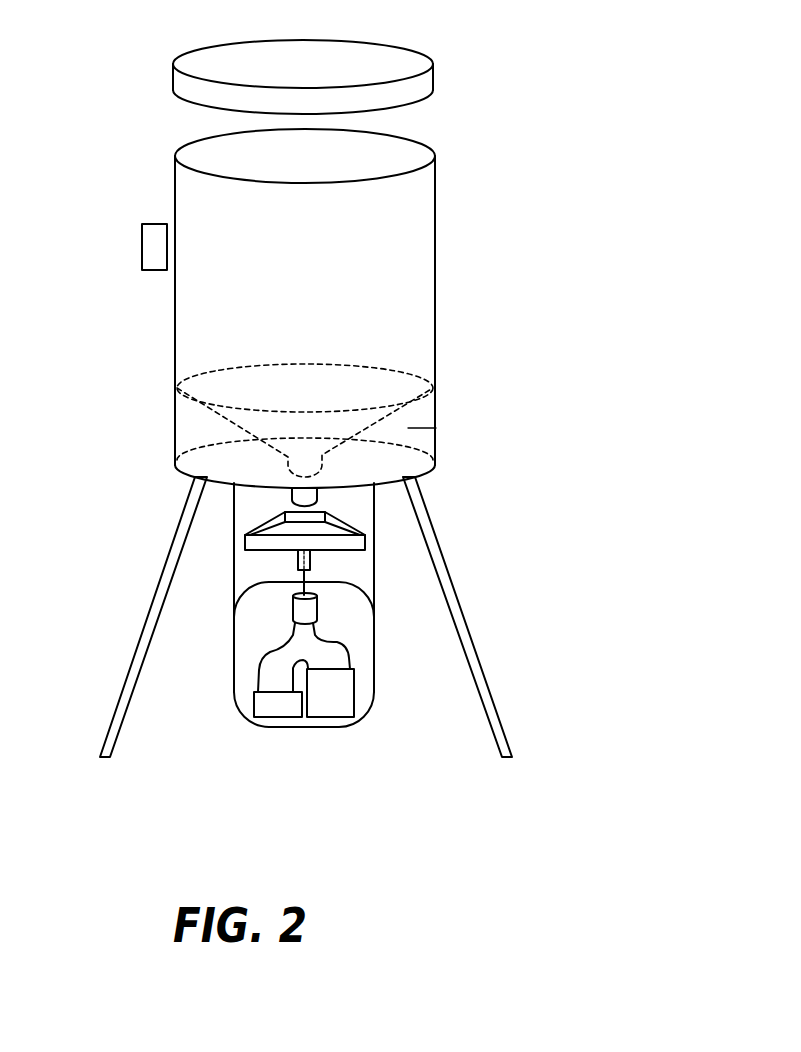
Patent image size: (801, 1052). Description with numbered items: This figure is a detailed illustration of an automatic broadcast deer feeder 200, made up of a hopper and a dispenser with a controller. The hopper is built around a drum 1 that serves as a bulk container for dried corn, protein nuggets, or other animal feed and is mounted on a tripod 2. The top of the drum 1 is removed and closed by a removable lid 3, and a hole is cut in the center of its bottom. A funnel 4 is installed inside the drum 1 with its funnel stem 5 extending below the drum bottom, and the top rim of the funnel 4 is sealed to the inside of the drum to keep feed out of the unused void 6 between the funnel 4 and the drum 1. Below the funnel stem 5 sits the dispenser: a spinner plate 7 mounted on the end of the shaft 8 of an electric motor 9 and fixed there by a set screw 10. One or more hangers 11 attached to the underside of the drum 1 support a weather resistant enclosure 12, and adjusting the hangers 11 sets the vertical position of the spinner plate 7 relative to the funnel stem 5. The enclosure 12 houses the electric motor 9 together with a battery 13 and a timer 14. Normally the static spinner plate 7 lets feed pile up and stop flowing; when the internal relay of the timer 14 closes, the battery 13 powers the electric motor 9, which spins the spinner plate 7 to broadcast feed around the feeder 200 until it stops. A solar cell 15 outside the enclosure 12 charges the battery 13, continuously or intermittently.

The automatic broadcast deer feeder 200 is at (632, 80).
The drum 1 is at (175, 175).
The tripod 2 is at (148, 622).
The removable lid 3 is at (173, 73).
The funnel 4 is at (213, 415).
The funnel stem 5 is at (415, 487).
The unused void 6 is at (408, 428).
The spinner plate 7 is at (247, 547).
The shaft 8 is at (302, 578).
The electric motor 9 is at (317, 613).
The set screw 10 is at (316, 560).
The hangers 11 is at (234, 597).
The weather resistant enclosure 12 is at (375, 663).
The battery 13 is at (254, 703).
The timer 14 is at (355, 700).
The solar cell 15 is at (142, 242).